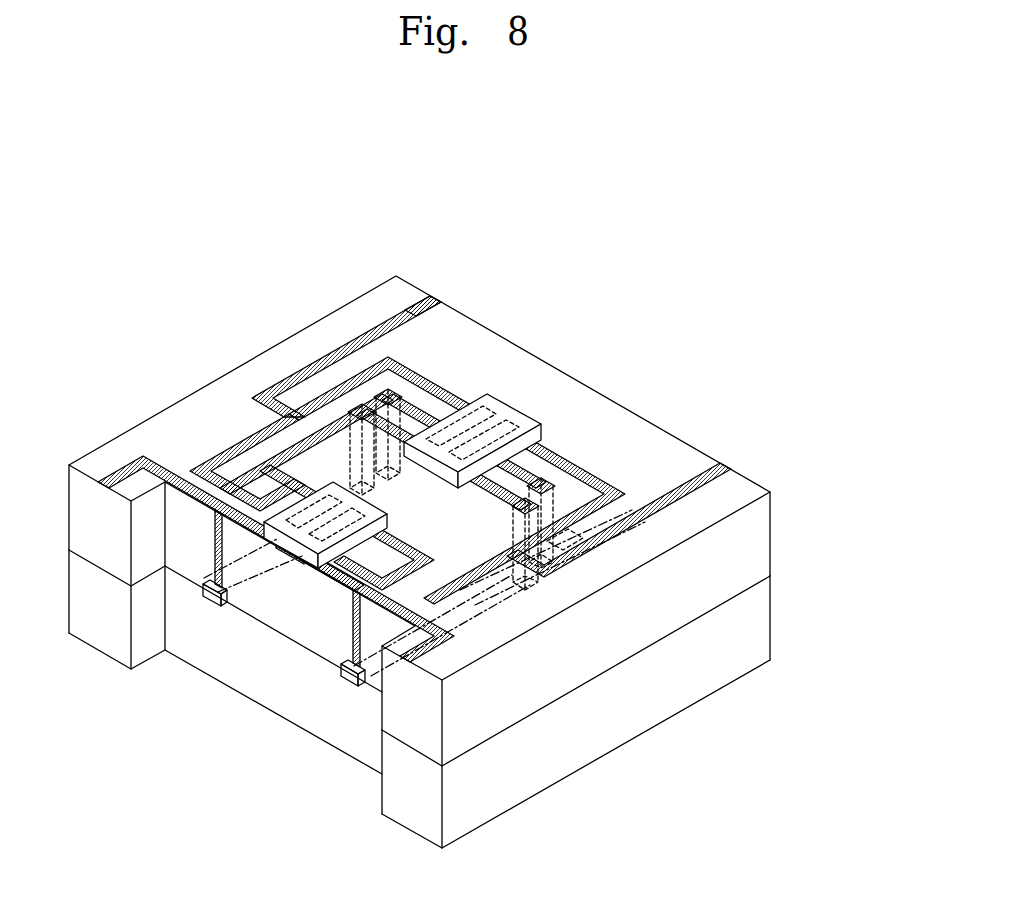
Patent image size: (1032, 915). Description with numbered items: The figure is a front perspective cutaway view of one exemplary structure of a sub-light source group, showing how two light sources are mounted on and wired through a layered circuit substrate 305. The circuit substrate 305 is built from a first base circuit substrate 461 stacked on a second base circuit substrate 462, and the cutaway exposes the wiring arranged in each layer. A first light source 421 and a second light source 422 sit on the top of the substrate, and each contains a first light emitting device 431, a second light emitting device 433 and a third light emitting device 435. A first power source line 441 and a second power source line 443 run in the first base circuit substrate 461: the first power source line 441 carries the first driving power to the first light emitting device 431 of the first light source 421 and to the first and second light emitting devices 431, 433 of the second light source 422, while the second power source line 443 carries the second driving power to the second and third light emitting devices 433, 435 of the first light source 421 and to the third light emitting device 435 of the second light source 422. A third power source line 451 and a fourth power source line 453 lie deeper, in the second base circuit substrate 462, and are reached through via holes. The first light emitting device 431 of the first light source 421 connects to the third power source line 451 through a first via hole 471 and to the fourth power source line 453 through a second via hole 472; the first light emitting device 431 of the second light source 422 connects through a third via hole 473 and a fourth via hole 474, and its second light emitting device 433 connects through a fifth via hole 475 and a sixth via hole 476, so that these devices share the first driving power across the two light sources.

The circuit substrate 305 is at (487, 562).
The first base circuit substrate 461 is at (760, 543).
The second base circuit substrate 462 is at (850, 533).
The first power source line 441 is at (125, 470).
The second power source line 443 is at (393, 318).
The first via hole 471 is at (222, 510).
The second via hole 472 is at (480, 578).
The third via hole 473 is at (305, 373).
The fourth via hole 474 is at (492, 498).
The fifth via hole 475 is at (403, 398).
The sixth via hole 476 is at (541, 483).
The first light source 421 is at (325, 492).
The second light source 422 is at (507, 400).
The third light emitting device 435 is at (336, 516).
The first light emitting device 431 is at (290, 560).
The second light emitting device 433 is at (330, 566).
The third power source line 451 is at (215, 600).
The fourth power source line 453 is at (355, 686).